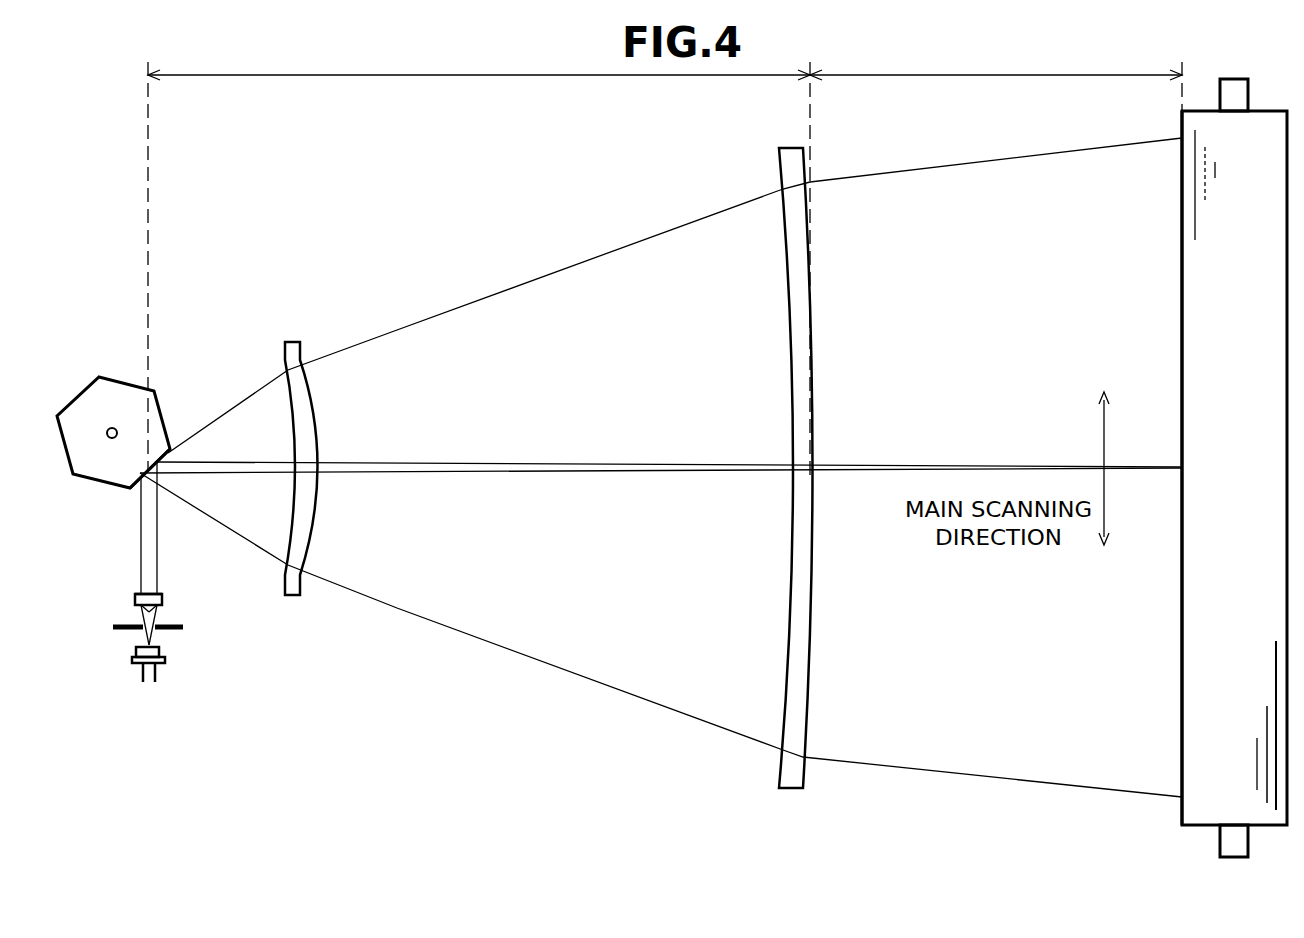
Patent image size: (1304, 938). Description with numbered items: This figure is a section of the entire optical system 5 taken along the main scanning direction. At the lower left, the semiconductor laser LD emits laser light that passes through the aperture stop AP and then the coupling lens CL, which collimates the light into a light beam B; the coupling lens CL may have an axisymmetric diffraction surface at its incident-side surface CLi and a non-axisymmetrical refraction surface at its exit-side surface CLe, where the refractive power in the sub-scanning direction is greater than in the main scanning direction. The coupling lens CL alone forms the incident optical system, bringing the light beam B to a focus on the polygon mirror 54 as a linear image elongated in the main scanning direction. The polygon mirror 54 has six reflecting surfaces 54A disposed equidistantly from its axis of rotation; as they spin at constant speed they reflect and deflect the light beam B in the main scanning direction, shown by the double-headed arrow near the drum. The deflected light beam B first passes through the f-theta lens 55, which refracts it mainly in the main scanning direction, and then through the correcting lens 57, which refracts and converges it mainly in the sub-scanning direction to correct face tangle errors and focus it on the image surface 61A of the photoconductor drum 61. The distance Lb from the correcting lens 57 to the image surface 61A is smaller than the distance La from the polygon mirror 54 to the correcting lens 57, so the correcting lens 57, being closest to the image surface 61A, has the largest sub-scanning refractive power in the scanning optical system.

The optical scanning device 5 is at (358, 226).
The polygon mirror 54 is at (110, 382).
The reflecting surfaces 54A is at (132, 490).
The f-theta lens 55 is at (320, 429).
The correcting lens 57 is at (818, 357).
The photoconductor drum 61 is at (1260, 128).
The image surface 61A is at (1182, 272).
The light beam B is at (515, 462).
The coupling lens CL is at (162, 598).
The exit-side surface CLe is at (142, 594).
The incident-side surface CLi is at (142, 613).
The aperture stop AP is at (183, 627).
The semiconductor laser LD is at (165, 658).
The distance from the polygon mirror to the correcting lens La is at (479, 257).
The distance from the correcting lens to the image surface Lb is at (996, 260).